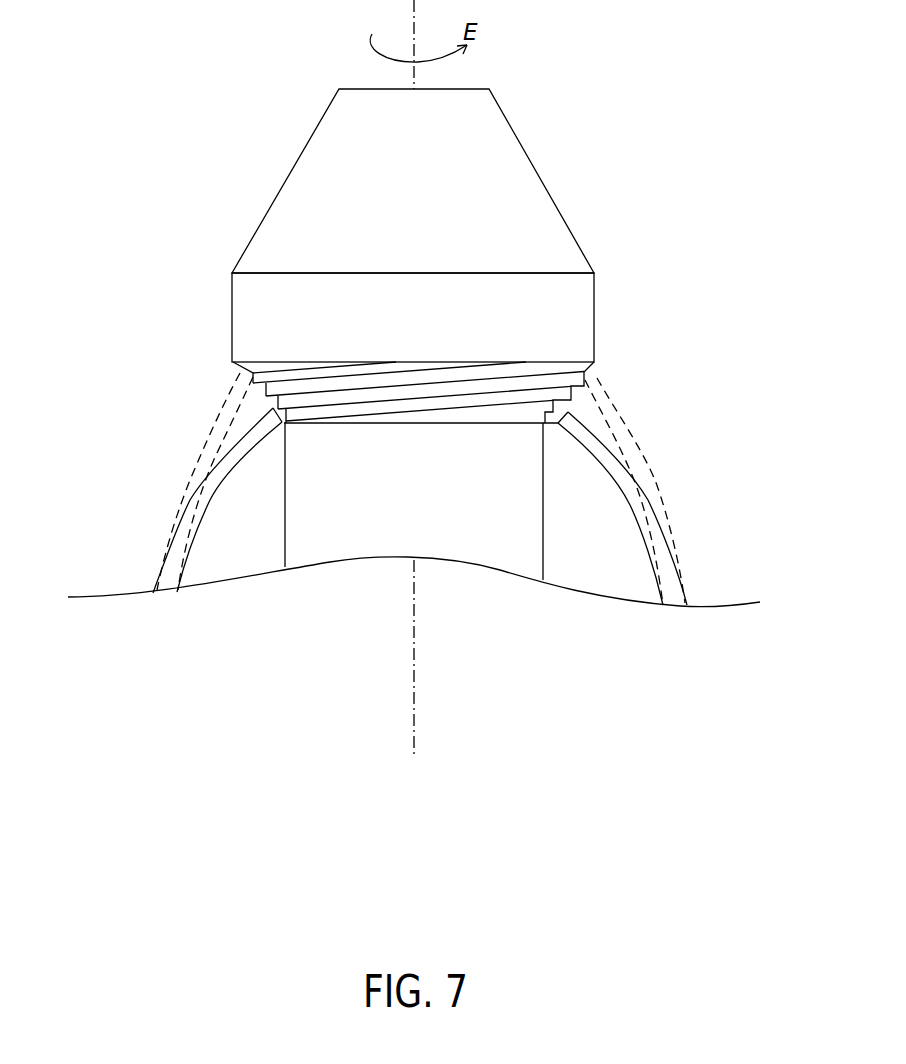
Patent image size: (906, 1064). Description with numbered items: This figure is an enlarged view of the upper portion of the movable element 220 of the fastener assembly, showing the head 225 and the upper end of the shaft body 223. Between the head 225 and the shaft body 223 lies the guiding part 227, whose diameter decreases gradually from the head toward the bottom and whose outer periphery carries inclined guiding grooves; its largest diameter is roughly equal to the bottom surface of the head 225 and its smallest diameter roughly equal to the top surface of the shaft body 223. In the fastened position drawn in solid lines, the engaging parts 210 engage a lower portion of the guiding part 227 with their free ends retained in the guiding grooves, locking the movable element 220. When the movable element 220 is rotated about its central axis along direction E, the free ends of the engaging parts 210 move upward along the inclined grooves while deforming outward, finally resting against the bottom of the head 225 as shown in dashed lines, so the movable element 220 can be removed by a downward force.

The engaging parts 210 is at (157, 572).
The movable element 220 is at (275, 187).
The shaft body 223 is at (436, 504).
The head 225 is at (502, 158).
The guiding part 227 is at (583, 371).